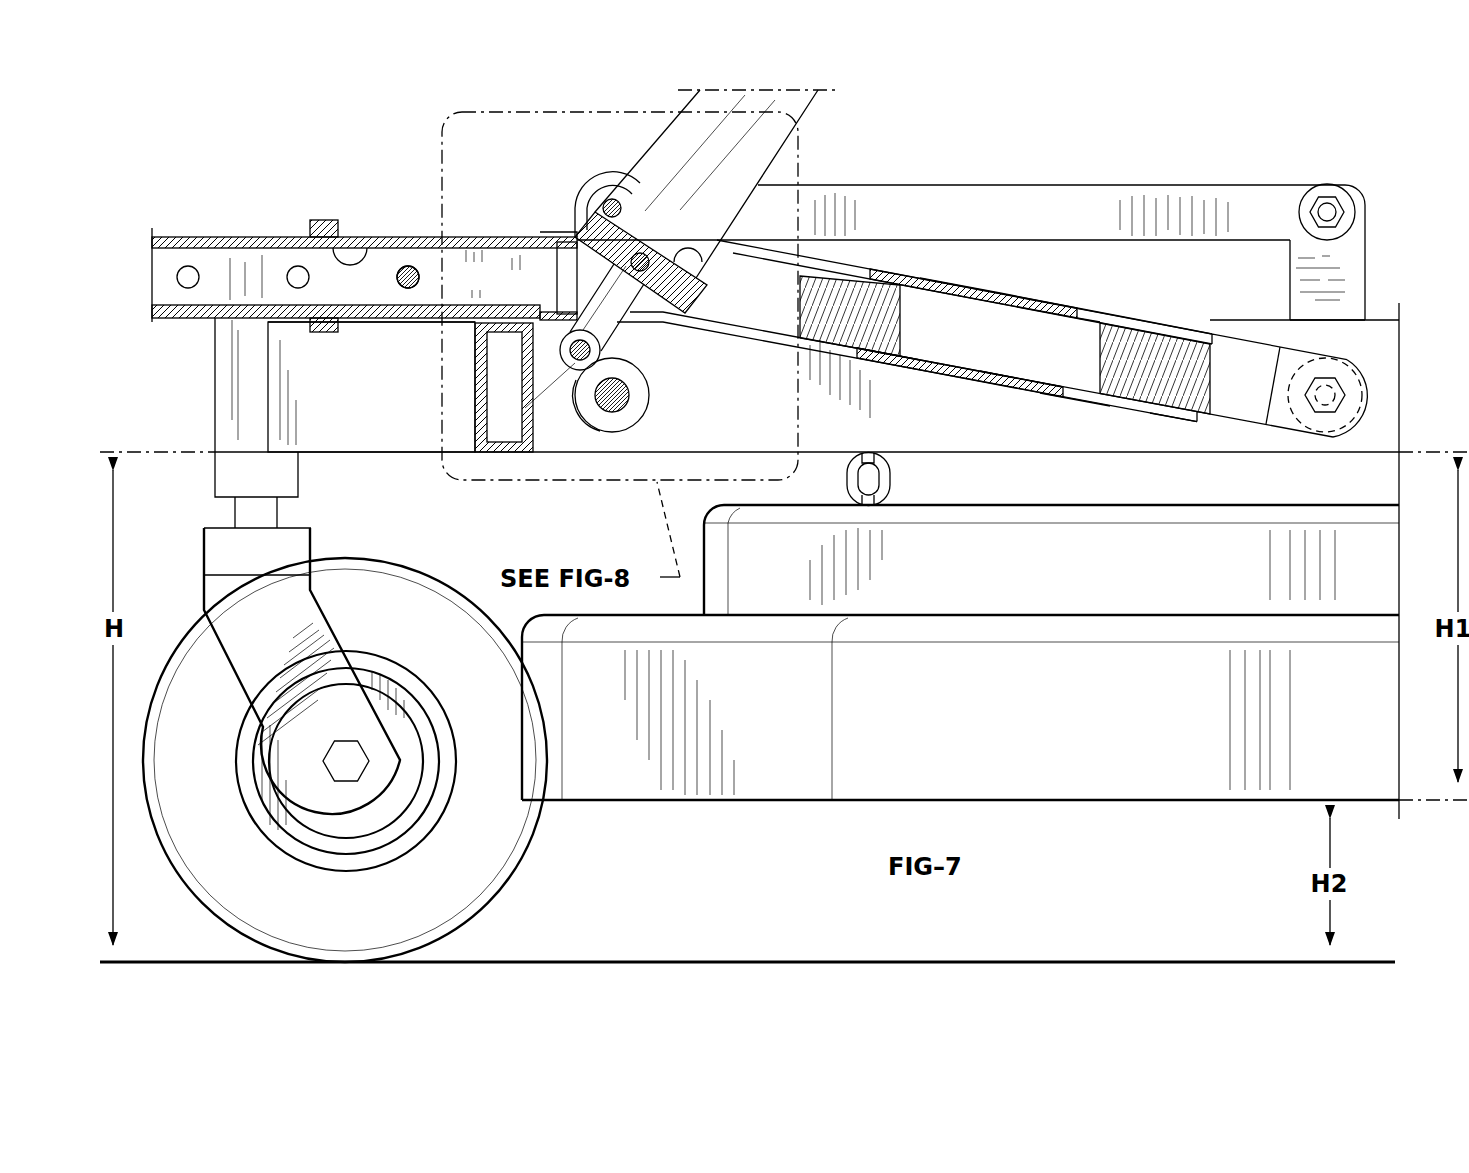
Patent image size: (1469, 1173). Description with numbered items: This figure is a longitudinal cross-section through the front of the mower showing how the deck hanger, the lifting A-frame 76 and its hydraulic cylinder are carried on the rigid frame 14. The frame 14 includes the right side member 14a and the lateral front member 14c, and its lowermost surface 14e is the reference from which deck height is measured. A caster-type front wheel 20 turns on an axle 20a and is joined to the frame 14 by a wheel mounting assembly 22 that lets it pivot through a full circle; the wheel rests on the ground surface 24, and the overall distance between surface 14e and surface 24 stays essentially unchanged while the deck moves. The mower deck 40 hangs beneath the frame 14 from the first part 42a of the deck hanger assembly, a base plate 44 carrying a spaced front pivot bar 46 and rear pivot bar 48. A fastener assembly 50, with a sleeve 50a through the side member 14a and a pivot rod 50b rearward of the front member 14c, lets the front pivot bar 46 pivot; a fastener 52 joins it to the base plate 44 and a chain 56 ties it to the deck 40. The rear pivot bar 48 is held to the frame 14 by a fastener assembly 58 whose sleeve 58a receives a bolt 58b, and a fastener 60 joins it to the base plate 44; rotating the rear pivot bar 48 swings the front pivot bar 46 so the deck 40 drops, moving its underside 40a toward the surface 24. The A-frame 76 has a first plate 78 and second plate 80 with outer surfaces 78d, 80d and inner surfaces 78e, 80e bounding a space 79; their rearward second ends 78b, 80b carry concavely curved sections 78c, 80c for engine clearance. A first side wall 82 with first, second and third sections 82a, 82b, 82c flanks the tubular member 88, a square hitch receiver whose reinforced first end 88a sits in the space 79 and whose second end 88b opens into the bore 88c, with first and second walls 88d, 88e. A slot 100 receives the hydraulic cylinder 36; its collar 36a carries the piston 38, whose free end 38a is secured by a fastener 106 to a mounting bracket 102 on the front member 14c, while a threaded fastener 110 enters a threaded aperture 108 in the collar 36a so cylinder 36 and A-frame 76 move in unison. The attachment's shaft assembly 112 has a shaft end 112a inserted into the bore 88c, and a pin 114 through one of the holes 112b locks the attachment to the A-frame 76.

The frame 14 is at (1051, 536).
The right side member 14a is at (1325, 333).
The front member 14c is at (500, 455).
The lowermost surface 14e is at (1113, 457).
The front wheel 20 is at (516, 889).
The axle 20a is at (350, 779).
The wheel mounting assembly 22 is at (212, 421).
The surface 24 is at (750, 960).
The hydraulic cylinder 36 is at (820, 108).
The collar 36a is at (692, 300).
The piston 38 is at (618, 338).
The free end 38a is at (560, 366).
The mower deck 40 is at (1180, 748).
The underside 40a is at (1253, 801).
The first part 42a is at (1138, 172).
The base plate 44 is at (1258, 197).
The front pivot bar 46 is at (590, 180).
The rear pivot bar 48 is at (1360, 244).
The fastener assembly 50 is at (618, 434).
The sleeve 50a is at (632, 419).
The pivot rod 50b is at (630, 394).
The fastener 52 is at (610, 204).
The chain 56 is at (893, 484).
The fastener assembly 58 is at (1318, 428).
The sleeve 58a is at (1350, 394).
The bolt 58b is at (1336, 394).
The fastener 60 is at (1332, 212).
The A-frame 76 is at (1032, 252).
The first plate 78 is at (940, 270).
The second end 78b is at (1215, 333).
The concavely curved section 78c is at (1100, 332).
The outer surface 78d is at (1003, 290).
The inner surface 78e is at (982, 300).
The space 79 is at (1022, 338).
The second plate 80 is at (1028, 400).
The second end 80b is at (1195, 424).
The concavely curved section 80c is at (1073, 400).
The outer surface 80d is at (895, 366).
The inner surface 80e is at (1028, 382).
The first side wall 82 is at (1233, 372).
The first section 82a is at (576, 282).
The second section 82b is at (977, 340).
The third section 82c is at (1366, 370).
The tubular member 88 is at (472, 232).
The first end 88a is at (298, 266).
The second end 88b is at (550, 246).
The bore 88c is at (340, 248).
The first wall 88d is at (367, 256).
The second wall 88e is at (363, 332).
The slot 100 is at (848, 264).
The mounting bracket 102 is at (540, 377).
The fastener 106 is at (553, 340).
The aperture 108 is at (641, 252).
The threaded fastener 110 is at (698, 264).
The shaft assembly 112 is at (202, 320).
The shaft end 112a is at (520, 268).
The holes 112b is at (190, 266).
The pin 114 is at (408, 266).